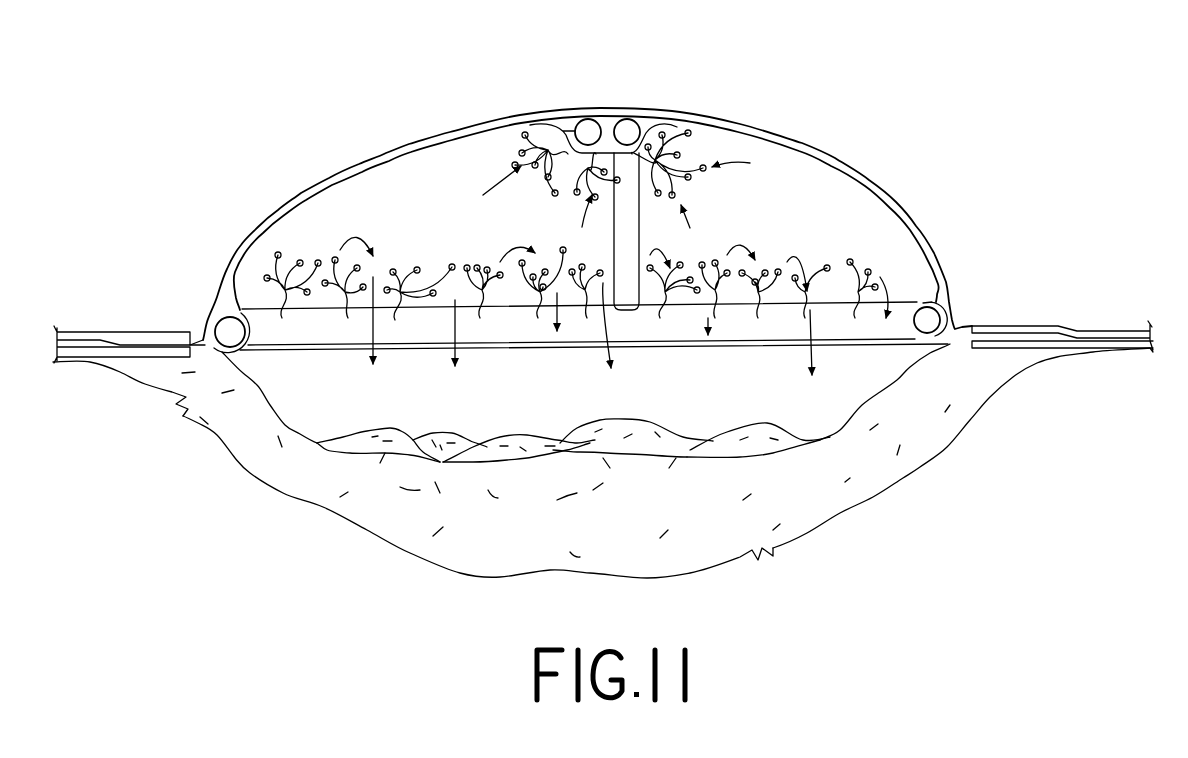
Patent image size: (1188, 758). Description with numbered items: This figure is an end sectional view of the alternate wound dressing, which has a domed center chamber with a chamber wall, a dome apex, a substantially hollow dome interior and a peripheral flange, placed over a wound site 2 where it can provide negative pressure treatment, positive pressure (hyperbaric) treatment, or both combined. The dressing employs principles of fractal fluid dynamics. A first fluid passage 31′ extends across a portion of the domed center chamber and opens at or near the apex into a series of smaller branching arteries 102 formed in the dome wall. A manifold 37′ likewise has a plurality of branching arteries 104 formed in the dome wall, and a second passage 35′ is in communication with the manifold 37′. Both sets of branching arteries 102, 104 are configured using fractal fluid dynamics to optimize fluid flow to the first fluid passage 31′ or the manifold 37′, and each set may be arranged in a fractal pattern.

The first fluid passage 31′ is at (590, 132).
The second passage 35′ is at (627, 132).
The manifold 37′ is at (992, 282).
The branching arteries 104 is at (571, 205).
The branching arteries 102 is at (614, 268).
The wound site 2 is at (601, 461).